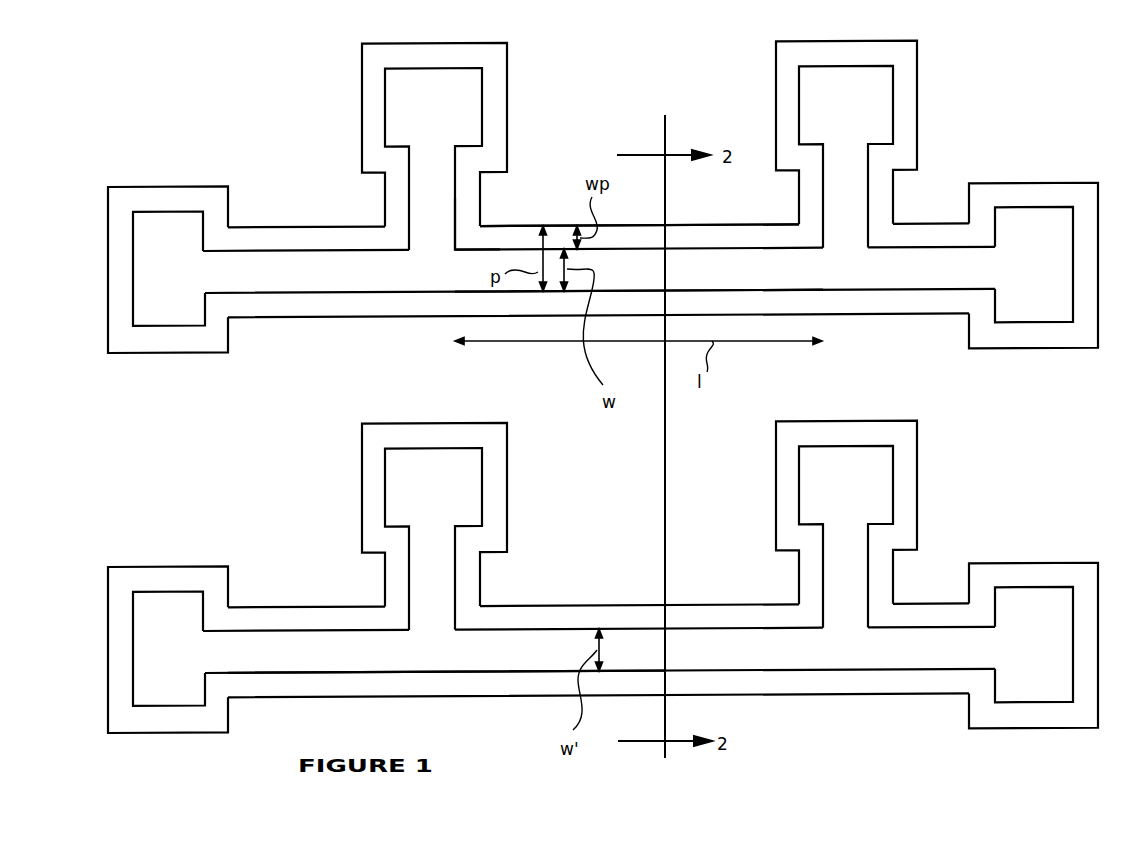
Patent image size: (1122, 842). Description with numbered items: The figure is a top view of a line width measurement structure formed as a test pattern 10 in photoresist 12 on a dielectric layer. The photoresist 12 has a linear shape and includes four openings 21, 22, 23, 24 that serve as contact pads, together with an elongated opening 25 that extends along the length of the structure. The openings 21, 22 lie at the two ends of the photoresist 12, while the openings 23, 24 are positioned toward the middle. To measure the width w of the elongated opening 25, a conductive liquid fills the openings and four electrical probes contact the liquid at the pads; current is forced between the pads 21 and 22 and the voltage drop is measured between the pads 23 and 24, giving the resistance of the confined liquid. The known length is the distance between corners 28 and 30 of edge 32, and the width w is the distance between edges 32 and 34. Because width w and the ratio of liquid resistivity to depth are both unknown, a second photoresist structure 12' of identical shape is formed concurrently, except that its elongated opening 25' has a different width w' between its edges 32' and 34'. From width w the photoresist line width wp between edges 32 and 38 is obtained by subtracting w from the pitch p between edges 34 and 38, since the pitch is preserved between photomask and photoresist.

The test pattern 10 is at (996, 82).
The photoresist 12 is at (1033, 241).
The second photoresist structure 12' is at (1033, 618).
The opening 21 is at (180, 318).
The opening 22 is at (1035, 303).
The opening 23 is at (453, 110).
The opening 24 is at (848, 103).
The elongated opening 25 is at (600, 327).
The elongated opening 25' is at (600, 694).
The corner 28 is at (455, 250).
The corner 30 is at (826, 229).
The edge 32 is at (639, 208).
The edge 32' is at (639, 597).
The edge 34 is at (639, 279).
The edge 34' is at (446, 661).
The edge 38 is at (560, 226).